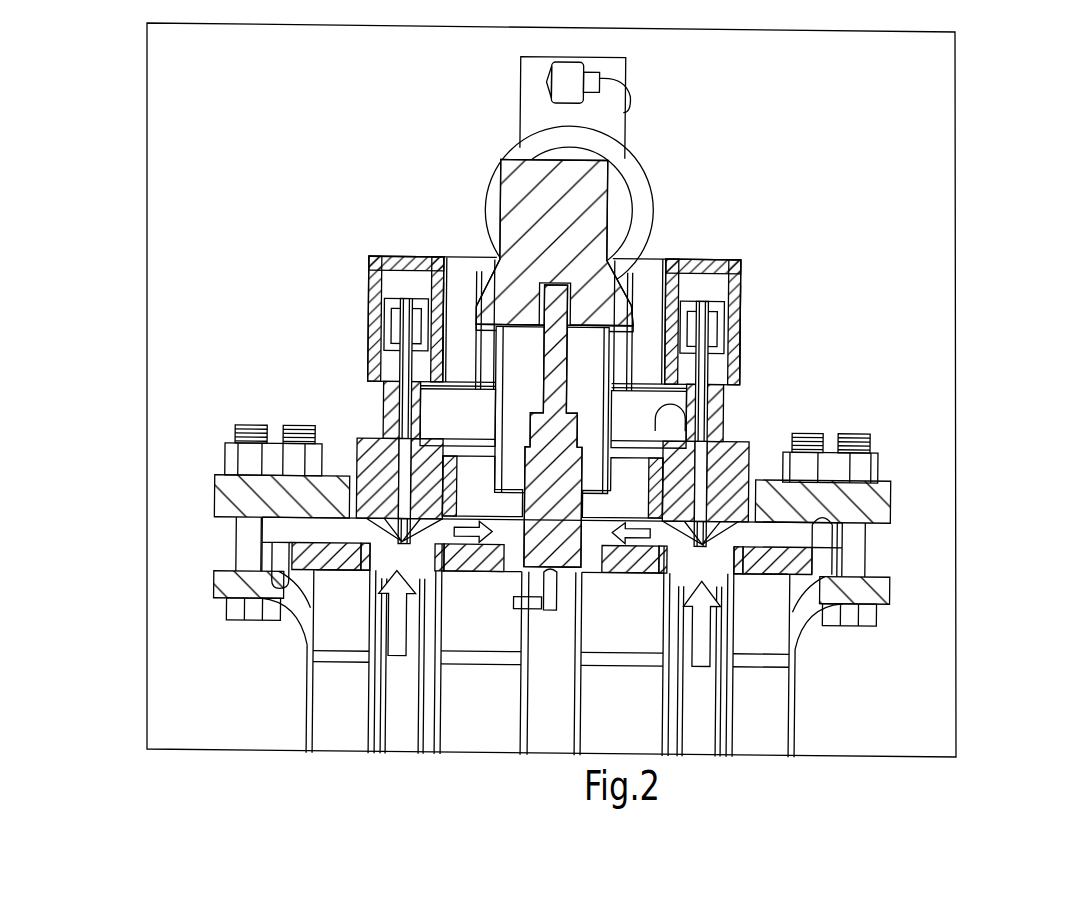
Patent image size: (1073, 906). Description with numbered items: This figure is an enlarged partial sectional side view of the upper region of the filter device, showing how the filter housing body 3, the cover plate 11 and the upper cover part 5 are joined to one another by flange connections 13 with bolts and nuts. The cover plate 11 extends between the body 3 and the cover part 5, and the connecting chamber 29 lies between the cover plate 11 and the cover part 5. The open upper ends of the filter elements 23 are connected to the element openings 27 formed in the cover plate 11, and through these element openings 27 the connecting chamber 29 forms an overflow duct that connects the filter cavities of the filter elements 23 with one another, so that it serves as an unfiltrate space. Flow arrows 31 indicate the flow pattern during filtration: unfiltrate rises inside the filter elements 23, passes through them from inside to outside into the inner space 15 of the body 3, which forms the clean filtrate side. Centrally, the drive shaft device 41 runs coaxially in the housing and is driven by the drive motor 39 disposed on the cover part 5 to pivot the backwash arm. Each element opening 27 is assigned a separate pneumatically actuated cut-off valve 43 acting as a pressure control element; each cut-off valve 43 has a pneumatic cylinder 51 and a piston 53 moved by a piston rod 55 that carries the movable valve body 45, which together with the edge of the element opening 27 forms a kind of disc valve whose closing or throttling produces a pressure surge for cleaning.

The body 3 is at (312, 708).
The upper cover part 5 is at (815, 490).
The cover plate 11 is at (825, 556).
The flange connections 13 is at (243, 545).
The inner space 15 is at (343, 700).
The filter elements 23 is at (430, 675).
The element openings 27 is at (378, 562).
The connecting chamber 29 is at (313, 528).
The flow arrows 31 is at (463, 560).
The drive motor 39 is at (608, 205).
The drive shaft device 41 is at (560, 690).
The cut-off valve 43 is at (318, 296).
The valve body 45 is at (385, 505).
The pneumatic cylinder 51 is at (410, 270).
The piston 53 is at (378, 282).
The piston rod 55 is at (398, 408).